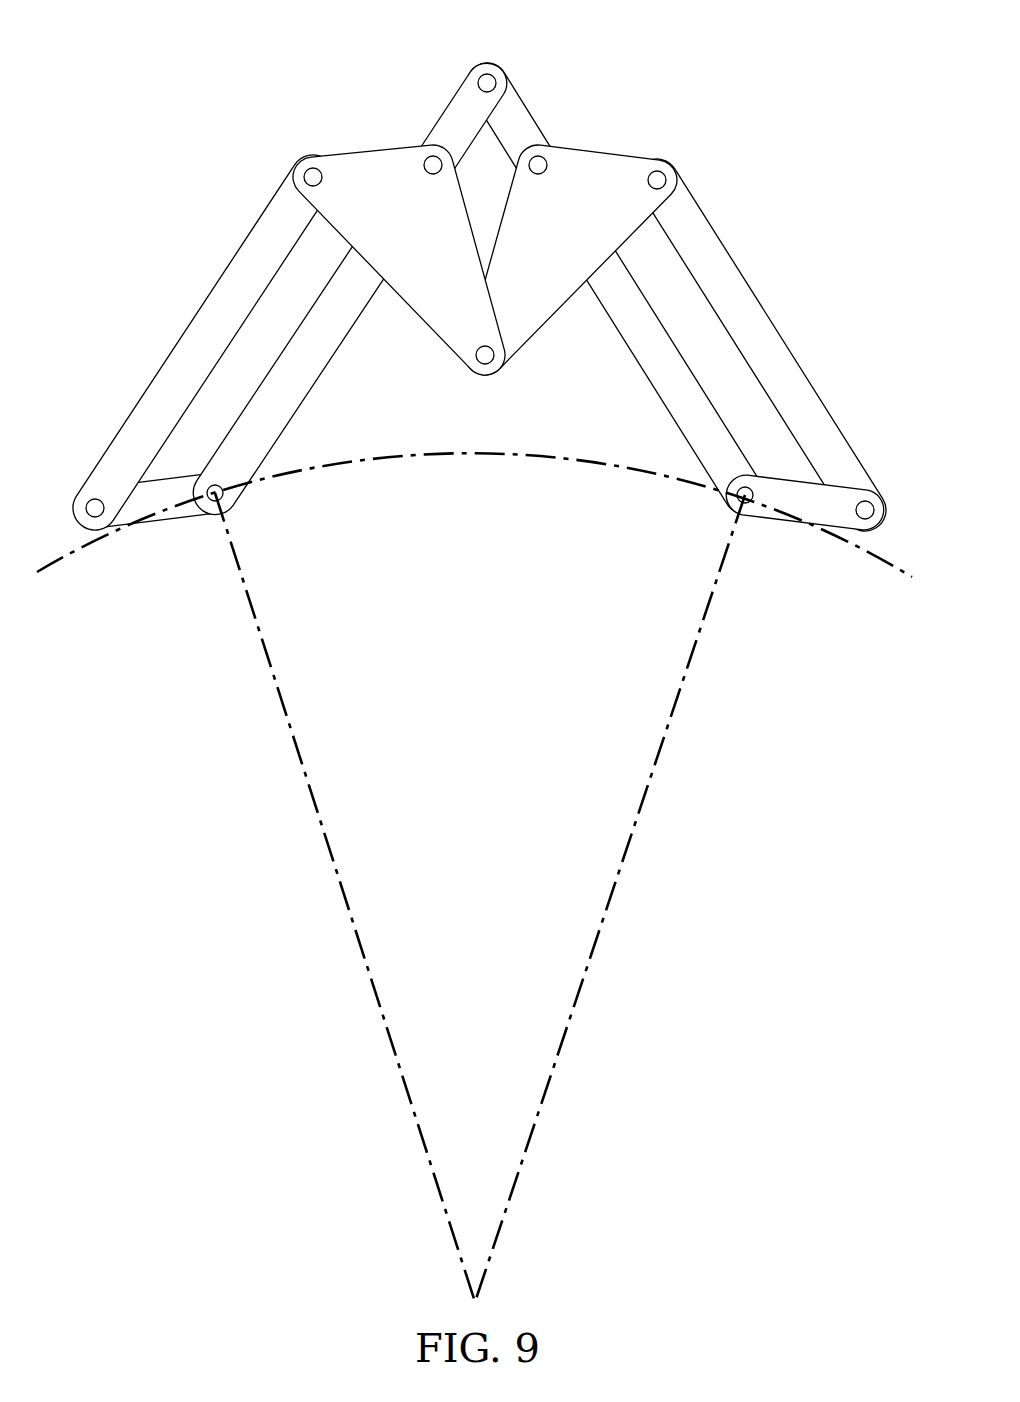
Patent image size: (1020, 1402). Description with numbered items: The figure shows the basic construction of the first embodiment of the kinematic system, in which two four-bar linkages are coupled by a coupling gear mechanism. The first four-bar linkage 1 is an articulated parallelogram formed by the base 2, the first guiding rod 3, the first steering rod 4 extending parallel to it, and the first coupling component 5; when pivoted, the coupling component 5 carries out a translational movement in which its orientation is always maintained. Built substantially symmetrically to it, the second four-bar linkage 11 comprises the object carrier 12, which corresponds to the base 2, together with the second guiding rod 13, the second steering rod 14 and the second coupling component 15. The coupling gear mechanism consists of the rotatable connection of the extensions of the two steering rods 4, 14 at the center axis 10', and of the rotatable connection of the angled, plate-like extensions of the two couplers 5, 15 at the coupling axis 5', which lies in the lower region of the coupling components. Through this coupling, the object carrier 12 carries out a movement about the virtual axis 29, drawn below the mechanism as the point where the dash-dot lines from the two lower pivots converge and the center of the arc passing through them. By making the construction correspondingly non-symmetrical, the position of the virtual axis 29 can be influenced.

The first four-bar linkage 1 is at (257, 376).
The base 2 is at (178, 519).
The first guiding rod 3 is at (186, 330).
The first steering rod 4 is at (315, 383).
The first coupling component 5 is at (399, 234).
The coupling axis 5' is at (468, 386).
The second bearing axis 10' is at (485, 103).
The second four-bar linkage 11 is at (757, 250).
The object carrier 12 is at (768, 519).
The second guiding rod 13 is at (777, 330).
The second steering rod 14 is at (653, 387).
The second coupling component 15 is at (600, 152).
The virtual axis 29 is at (478, 1303).